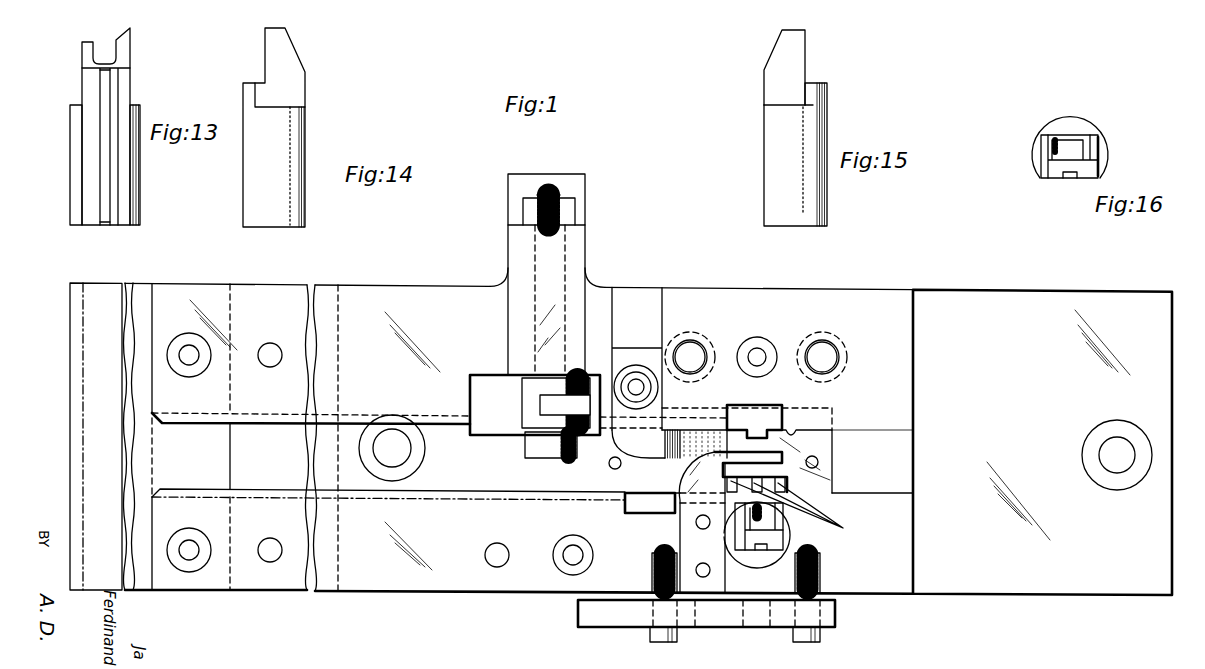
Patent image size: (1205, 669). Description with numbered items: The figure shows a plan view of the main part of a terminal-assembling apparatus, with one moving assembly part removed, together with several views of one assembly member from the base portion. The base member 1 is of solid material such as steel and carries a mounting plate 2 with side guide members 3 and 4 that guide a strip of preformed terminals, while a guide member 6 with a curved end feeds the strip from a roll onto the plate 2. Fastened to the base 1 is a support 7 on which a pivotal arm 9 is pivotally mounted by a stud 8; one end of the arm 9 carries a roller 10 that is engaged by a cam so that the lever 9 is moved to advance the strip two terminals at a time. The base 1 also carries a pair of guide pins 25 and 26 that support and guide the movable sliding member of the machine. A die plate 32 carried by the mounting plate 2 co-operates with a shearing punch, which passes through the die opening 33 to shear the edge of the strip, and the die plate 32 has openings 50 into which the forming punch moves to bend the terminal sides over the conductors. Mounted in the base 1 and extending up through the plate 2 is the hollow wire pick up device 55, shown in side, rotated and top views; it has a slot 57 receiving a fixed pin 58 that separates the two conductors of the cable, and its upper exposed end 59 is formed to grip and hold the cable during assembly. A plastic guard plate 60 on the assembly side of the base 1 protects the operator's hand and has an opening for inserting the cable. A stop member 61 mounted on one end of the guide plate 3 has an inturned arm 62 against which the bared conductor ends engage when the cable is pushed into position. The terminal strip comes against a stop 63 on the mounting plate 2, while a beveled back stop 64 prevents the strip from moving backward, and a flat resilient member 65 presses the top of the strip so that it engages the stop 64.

In FIG. 1, the base member 1 is at (1043, 591).
In FIG. 1, the mounting plate 2 is at (917, 520).
In FIG. 1, the side guide member 3 is at (288, 582).
In FIG. 1, the side guide member 4 is at (278, 293).
In FIG. 1, the guide member 6 is at (141, 293).
In FIG. 1, the support 7 is at (510, 196).
In FIG. 1, the stud 8 is at (527, 452).
In FIG. 1, the pivotal arm 9 is at (522, 405).
In FIG. 1, the roller 10 is at (586, 450).
In FIG. 1, the guide pin 25 is at (700, 352).
In FIG. 1, the guide pin 26 is at (822, 352).
In FIG. 1, the die plate 32 is at (833, 466).
In FIG. 1, the die opening 33 is at (645, 513).
In FIG. 1, the openings 50 is at (805, 514).
In FIG. 13, the wire pick up device 55 is at (152, 203).
In FIG. 14, the wire pick up device 55 is at (314, 218).
In FIG. 15, the wire pick up device 55 is at (757, 207).
In FIG. 16, the wire pick up device 55 is at (1034, 186).
In FIG. 1, the wire pick up device 55 is at (800, 545).
In FIG. 13, the slot 57 is at (100, 188).
In FIG. 16, the slot 57 is at (1068, 180).
In FIG. 1, the fixed pin 58 is at (757, 515).
In FIG. 13, the upper end 59 is at (82, 100).
In FIG. 14, the upper end 59 is at (305, 101).
In FIG. 15, the upper end 59 is at (768, 103).
In FIG. 16, the upper end 59 is at (1040, 155).
In FIG. 1, the upper end 59 is at (725, 518).
In FIG. 1, the guard plate 60 is at (727, 627).
In FIG. 1, the stop member 61 is at (681, 549).
In FIG. 1, the inturned arm 62 is at (784, 457).
In FIG. 1, the stop 63 is at (810, 432).
In FIG. 1, the back stop 64 is at (698, 457).
In FIG. 1, the flat resilient member 65 is at (720, 443).